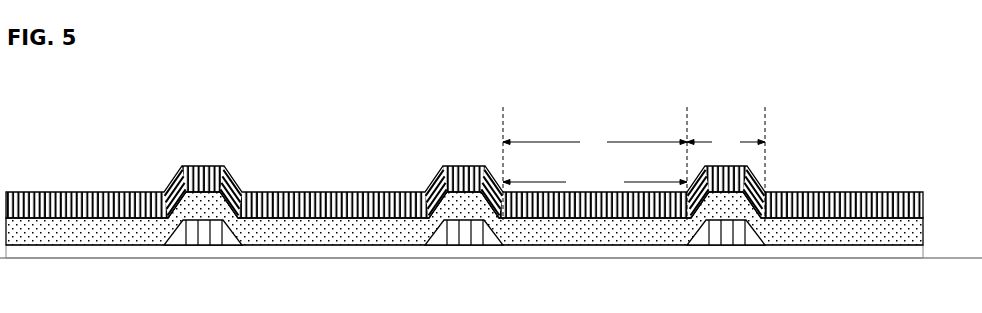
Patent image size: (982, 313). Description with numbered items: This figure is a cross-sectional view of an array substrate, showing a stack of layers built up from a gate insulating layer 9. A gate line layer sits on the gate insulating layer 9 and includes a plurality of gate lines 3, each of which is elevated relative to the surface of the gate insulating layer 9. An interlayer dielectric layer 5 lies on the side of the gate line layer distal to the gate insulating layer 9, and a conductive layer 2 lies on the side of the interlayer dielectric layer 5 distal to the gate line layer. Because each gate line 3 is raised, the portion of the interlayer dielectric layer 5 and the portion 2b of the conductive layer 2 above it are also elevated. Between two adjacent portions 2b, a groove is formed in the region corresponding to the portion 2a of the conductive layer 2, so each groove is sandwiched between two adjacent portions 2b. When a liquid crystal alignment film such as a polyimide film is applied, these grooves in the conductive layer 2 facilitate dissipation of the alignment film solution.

The conductive layer 2 is at (790, 207).
The portion of the conductive layer 2a is at (595, 163).
The portion of the conductive layer 2b is at (726, 163).
The gate line 3 is at (725, 232).
The interlayer dielectric layer 5 is at (790, 232).
The gate insulating layer 9 is at (640, 253).